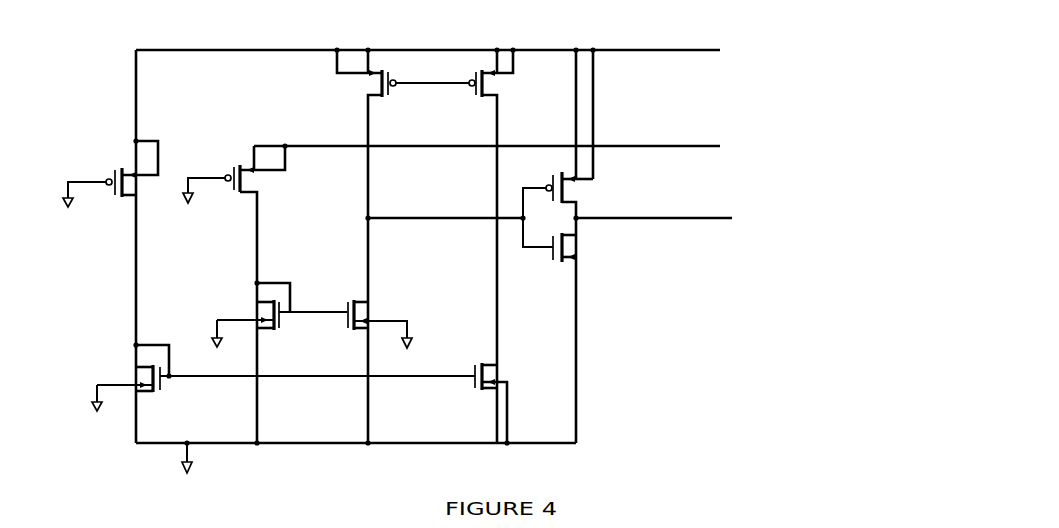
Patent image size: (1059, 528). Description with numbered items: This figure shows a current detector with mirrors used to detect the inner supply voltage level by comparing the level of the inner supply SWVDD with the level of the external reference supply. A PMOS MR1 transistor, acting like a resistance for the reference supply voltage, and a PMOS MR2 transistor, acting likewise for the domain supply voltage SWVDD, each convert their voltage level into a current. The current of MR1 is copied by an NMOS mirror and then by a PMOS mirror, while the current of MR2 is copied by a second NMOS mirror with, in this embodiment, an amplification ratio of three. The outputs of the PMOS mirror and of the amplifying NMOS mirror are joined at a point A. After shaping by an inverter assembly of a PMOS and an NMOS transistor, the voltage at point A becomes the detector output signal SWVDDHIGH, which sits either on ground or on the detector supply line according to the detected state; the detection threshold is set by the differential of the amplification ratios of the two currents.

The PMOS MR1 transistor MR1 is at (110, 172).
The PMOS MR2 transistor MR2 is at (234, 283).
The inner supply SWVDD is at (501, 136).
The high switched supply output net SWVDDHIGH is at (662, 208).
The point A is at (445, 218).